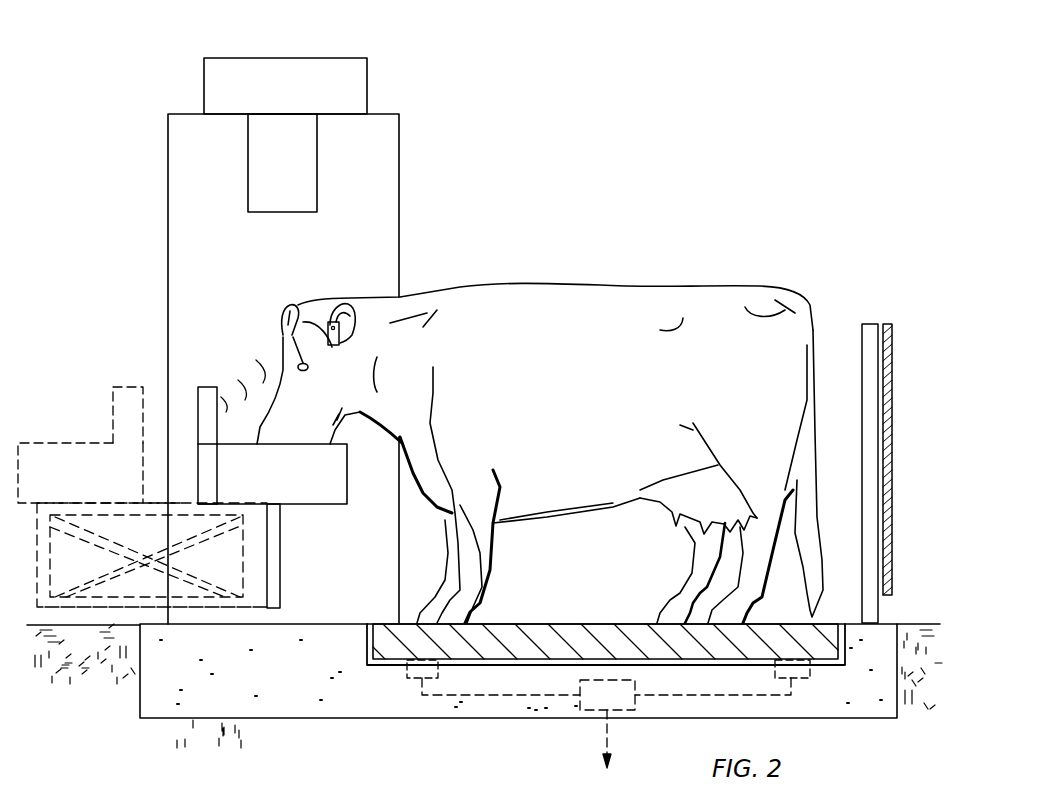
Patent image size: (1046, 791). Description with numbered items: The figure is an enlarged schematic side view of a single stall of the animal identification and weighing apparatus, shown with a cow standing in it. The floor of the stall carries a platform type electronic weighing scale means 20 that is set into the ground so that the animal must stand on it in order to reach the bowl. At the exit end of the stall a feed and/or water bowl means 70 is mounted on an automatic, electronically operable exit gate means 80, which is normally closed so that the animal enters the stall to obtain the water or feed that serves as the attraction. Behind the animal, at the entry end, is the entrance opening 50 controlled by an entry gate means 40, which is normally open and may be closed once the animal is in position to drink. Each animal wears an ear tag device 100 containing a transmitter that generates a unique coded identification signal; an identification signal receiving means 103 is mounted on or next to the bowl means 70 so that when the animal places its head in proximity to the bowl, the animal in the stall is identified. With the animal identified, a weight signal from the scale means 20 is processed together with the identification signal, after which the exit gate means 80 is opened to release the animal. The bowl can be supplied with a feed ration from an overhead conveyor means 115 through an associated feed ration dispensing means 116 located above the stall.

The overhead conveyor means 115 is at (352, 93).
The feed ration dispensing means 116 is at (296, 173).
The identification signal receiving means 103 is at (121, 385).
The feed and/or water bowl means 70 is at (62, 441).
The exit gate means 80 is at (279, 568).
The ear tag device 100 is at (339, 343).
The entry gate means 40 is at (892, 481).
The entrance opening 50 is at (878, 614).
The platform type electronic weighing scale means 20 is at (520, 652).